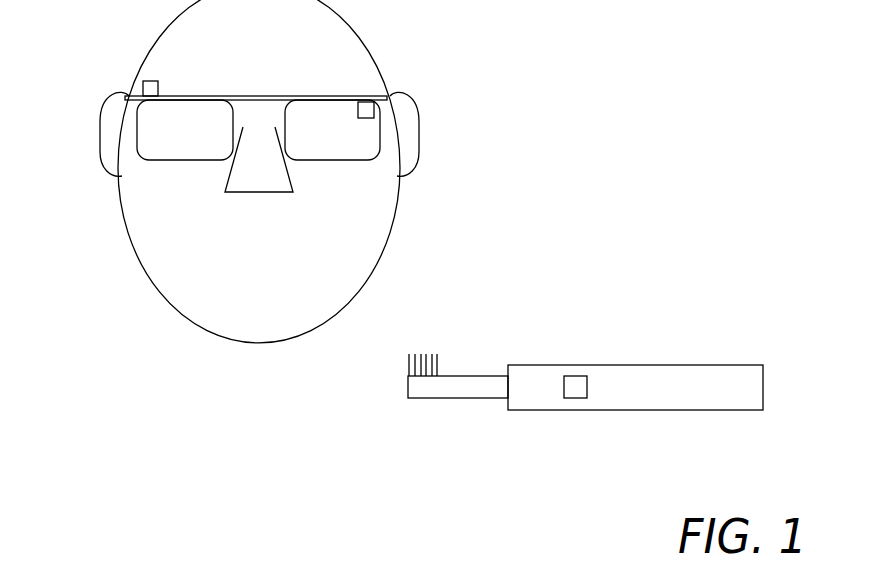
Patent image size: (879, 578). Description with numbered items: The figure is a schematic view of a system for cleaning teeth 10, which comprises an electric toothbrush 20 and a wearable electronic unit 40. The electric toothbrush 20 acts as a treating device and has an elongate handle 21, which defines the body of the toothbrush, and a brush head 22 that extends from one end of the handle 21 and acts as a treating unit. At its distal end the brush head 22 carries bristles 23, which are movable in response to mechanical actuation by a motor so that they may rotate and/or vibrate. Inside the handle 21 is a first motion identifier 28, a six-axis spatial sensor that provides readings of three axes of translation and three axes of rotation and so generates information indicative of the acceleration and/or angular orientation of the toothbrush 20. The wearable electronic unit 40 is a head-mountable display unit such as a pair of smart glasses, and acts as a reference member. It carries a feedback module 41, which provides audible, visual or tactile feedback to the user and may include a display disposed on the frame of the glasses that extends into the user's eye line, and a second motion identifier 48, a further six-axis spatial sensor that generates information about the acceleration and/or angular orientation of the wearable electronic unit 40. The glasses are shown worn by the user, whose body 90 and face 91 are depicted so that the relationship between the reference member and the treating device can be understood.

The system for cleaning teeth 10 is at (610, 92).
The electric toothbrush 20 is at (620, 359).
The handle 21 is at (655, 387).
The brush head 22 is at (427, 387).
The bristles 23 is at (426, 365).
The first motion identifier 28 is at (578, 387).
The wearable electronic unit 40 is at (279, 86).
The feedback module 41 is at (250, 98).
The second motion identifier 48 is at (152, 90).
The user's body 90 is at (259, 171).
The leg 91 is at (378, 213).